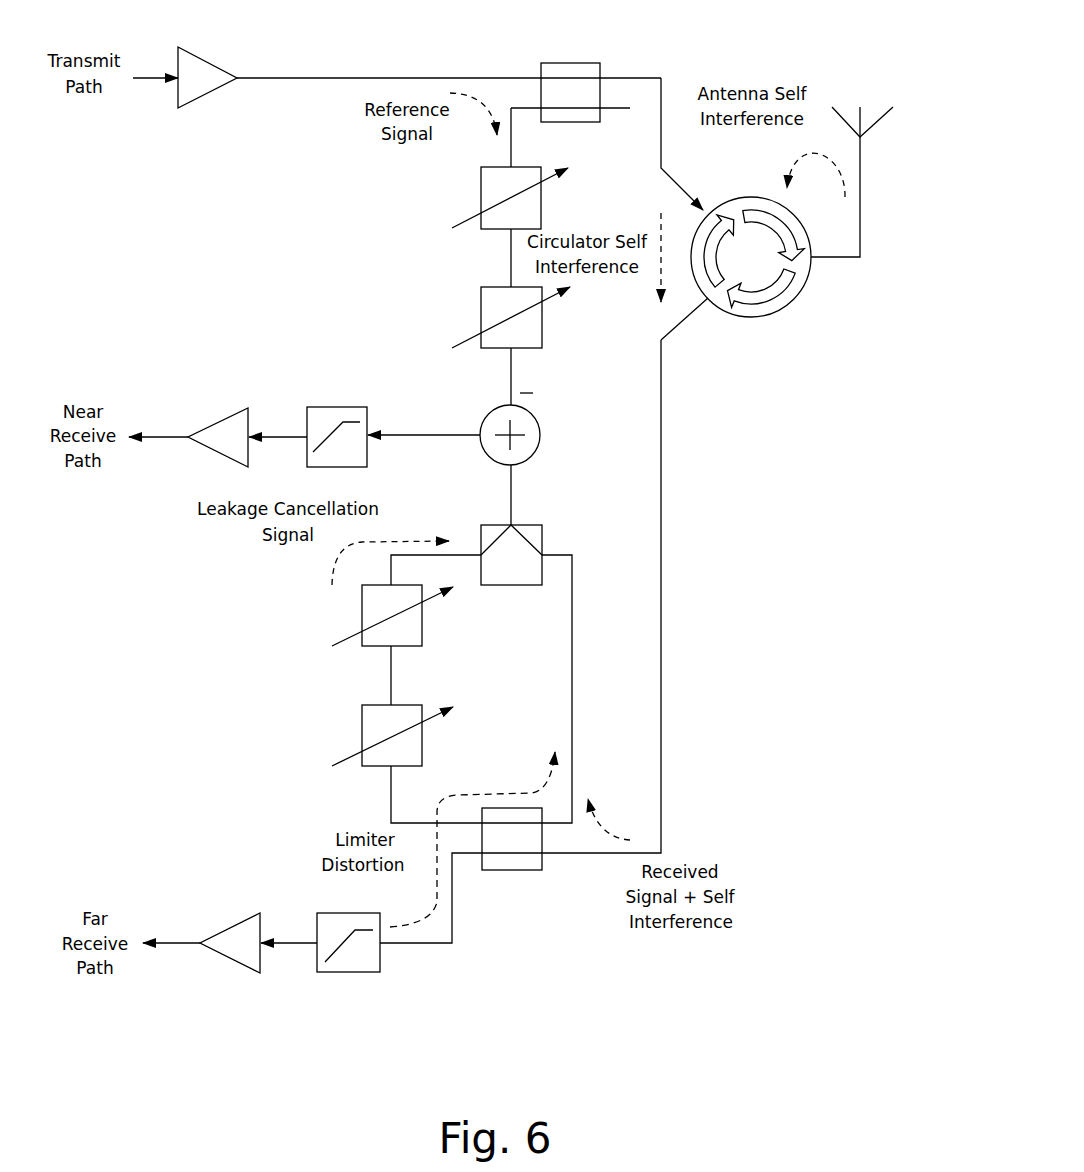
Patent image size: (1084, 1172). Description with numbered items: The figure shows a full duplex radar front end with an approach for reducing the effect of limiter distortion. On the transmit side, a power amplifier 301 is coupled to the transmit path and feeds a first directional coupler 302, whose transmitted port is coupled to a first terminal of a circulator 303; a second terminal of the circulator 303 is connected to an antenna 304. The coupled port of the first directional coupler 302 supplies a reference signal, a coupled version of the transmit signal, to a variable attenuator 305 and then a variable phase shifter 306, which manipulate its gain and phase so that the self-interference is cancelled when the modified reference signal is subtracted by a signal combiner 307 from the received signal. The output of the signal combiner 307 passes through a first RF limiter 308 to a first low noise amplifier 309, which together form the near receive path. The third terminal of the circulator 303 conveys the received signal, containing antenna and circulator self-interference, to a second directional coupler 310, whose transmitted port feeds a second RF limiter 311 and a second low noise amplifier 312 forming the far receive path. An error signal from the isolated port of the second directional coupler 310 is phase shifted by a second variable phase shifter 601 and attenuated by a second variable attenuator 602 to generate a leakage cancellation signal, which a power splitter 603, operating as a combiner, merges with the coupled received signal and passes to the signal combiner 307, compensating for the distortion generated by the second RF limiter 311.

The power amplifier 301 is at (210, 58).
The first directional coupler 302 is at (605, 67).
The circulator 303 is at (814, 299).
The antenna 304 is at (880, 156).
The variable attenuator 305 is at (470, 238).
The variable phase shifter 306 is at (483, 315).
The signal combiner 307 is at (548, 442).
The first Radio Frequency (RF) limiter 308 is at (291, 412).
The first Low Noise Amplifier 309 is at (192, 413).
The second directional coupler 310 is at (574, 911).
The second Radio Frequency (RF) limiter 311 is at (340, 1006).
The second Low Noise Amplifier 312 is at (264, 969).
The second variable phase shifter 601 is at (343, 706).
The second variable attenuator 602 is at (323, 648).
The power splitter 603 is at (549, 578).